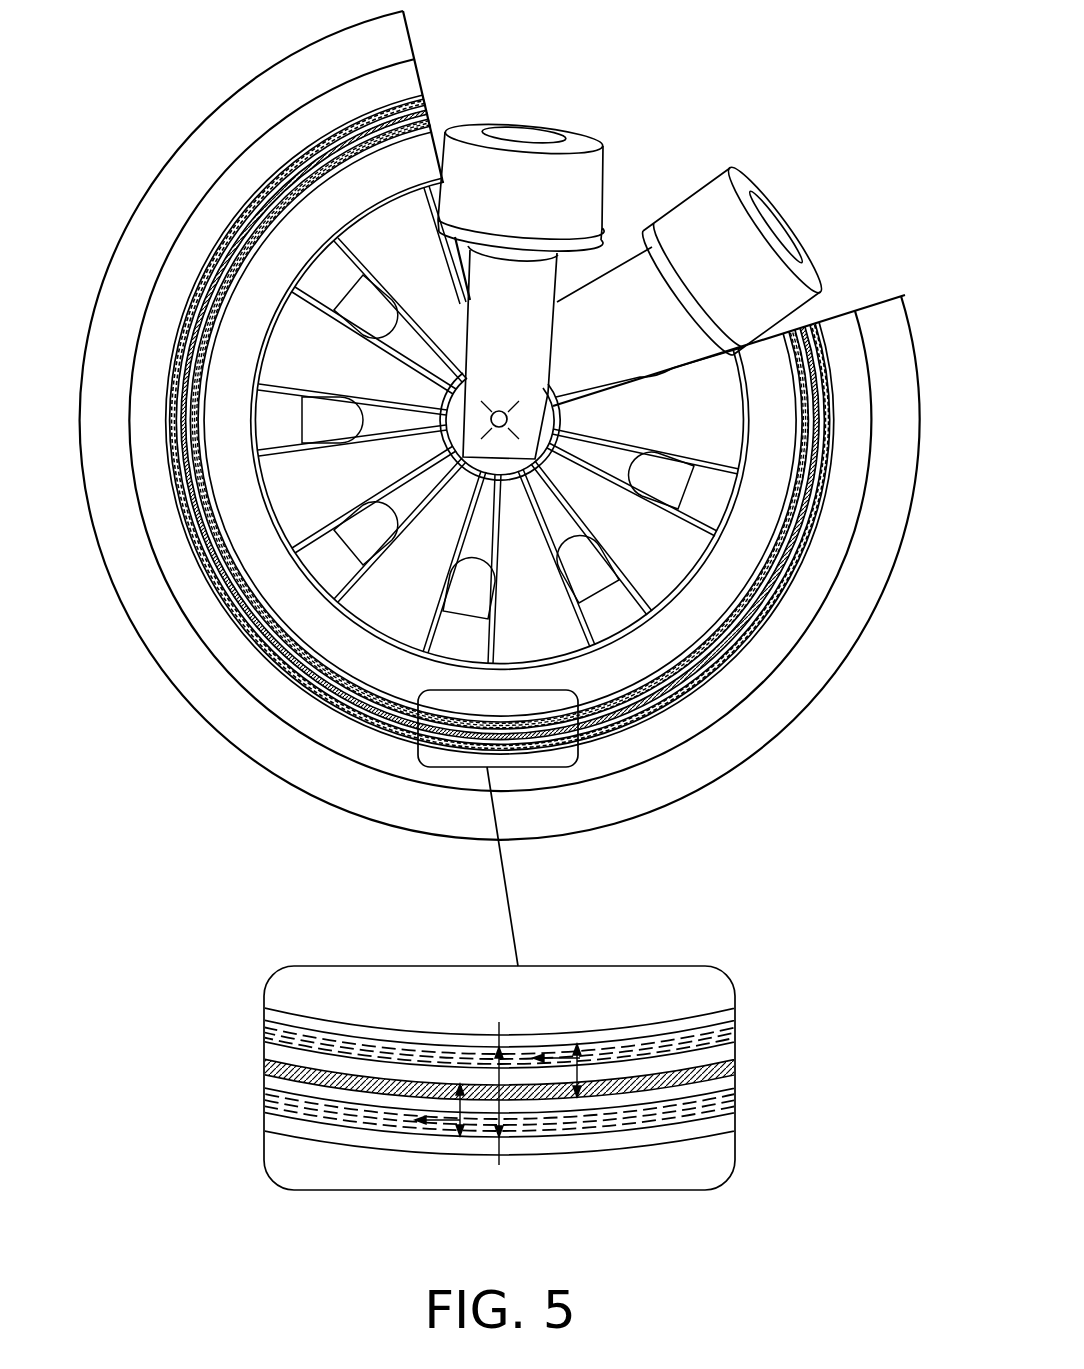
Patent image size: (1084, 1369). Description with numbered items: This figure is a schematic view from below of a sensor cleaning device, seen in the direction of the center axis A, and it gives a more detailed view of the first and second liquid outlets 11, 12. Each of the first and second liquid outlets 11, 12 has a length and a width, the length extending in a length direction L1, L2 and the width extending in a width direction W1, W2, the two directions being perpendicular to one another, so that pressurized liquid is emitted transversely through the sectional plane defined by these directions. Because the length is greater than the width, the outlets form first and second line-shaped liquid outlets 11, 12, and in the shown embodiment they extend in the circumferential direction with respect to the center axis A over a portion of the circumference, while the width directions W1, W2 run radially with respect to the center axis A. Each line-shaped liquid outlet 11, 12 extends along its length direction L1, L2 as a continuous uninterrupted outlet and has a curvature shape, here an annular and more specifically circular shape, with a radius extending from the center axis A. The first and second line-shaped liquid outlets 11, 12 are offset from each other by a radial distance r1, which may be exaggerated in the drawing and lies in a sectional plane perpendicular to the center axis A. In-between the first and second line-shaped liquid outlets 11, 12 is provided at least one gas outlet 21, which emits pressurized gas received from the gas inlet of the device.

The first line-shaped liquid outlet 11 is at (743, 610).
The gas outlet 21 is at (723, 640).
The second line-shaped liquid outlet 12 is at (710, 670).
The center axis A is at (505, 417).
The radial distance r1 is at (497, 1093).
The length direction of the first liquid outlet L1 is at (580, 1058).
The width direction of the first liquid outlet W1 is at (580, 1044).
The length direction of the second liquid outlet L2 is at (458, 1120).
The width direction of the second liquid outlet W2 is at (460, 1110).